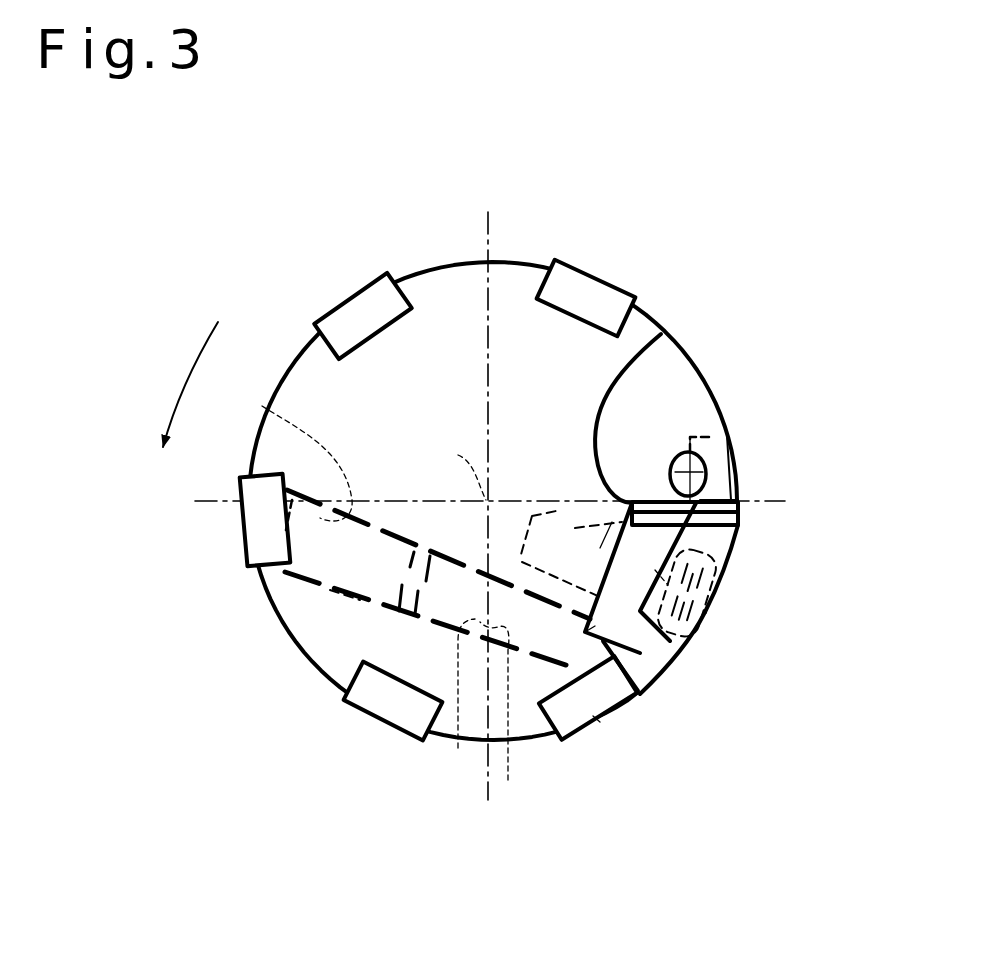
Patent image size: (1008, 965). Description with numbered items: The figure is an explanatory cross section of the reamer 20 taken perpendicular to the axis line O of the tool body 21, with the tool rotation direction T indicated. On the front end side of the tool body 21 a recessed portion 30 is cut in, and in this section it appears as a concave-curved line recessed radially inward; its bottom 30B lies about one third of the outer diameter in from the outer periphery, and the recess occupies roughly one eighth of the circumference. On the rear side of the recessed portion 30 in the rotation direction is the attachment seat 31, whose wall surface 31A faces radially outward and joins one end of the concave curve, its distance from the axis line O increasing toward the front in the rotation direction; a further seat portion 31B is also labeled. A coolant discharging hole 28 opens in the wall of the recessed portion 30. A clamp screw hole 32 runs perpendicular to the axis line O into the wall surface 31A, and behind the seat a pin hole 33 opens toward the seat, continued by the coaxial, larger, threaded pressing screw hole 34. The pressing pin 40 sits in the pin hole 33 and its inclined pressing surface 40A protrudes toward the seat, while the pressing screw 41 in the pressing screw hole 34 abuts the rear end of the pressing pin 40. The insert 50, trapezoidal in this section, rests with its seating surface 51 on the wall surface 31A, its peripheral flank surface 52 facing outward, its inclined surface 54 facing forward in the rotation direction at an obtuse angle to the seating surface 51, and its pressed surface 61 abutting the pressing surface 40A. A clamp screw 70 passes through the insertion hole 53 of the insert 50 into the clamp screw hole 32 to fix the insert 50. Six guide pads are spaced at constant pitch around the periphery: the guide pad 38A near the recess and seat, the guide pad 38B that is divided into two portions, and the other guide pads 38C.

The rotary cutting tool 20 is at (727, 207).
The tool body 21 is at (504, 240).
The coolant discharging hole 28 is at (690, 470).
The recessed portion 30 is at (735, 328).
The bottom 30B is at (603, 417).
The attachment seat 31 is at (699, 640).
The wall surface 31A is at (627, 532).
The second side surface of cartridge 31B is at (660, 655).
The clamp screw hole 32 is at (572, 535).
The pin hole 33 is at (501, 716).
The pressing screw hole 34 is at (262, 406).
The guide pad 38A is at (733, 455).
The guide pad 38B is at (258, 536).
The guide pads 38C is at (355, 305).
The pressing pin 40 is at (380, 640).
The pressing surface 40A is at (594, 716).
The pressing screw 41 is at (342, 588).
The insert 50 is at (748, 516).
The seating surface 51 is at (613, 521).
The peripheral flank surface 52 is at (729, 563).
The insertion hole 53 is at (660, 577).
The inclined surface 54 is at (723, 491).
The pressed surface 61 is at (590, 630).
The clamp screw 70 is at (700, 623).